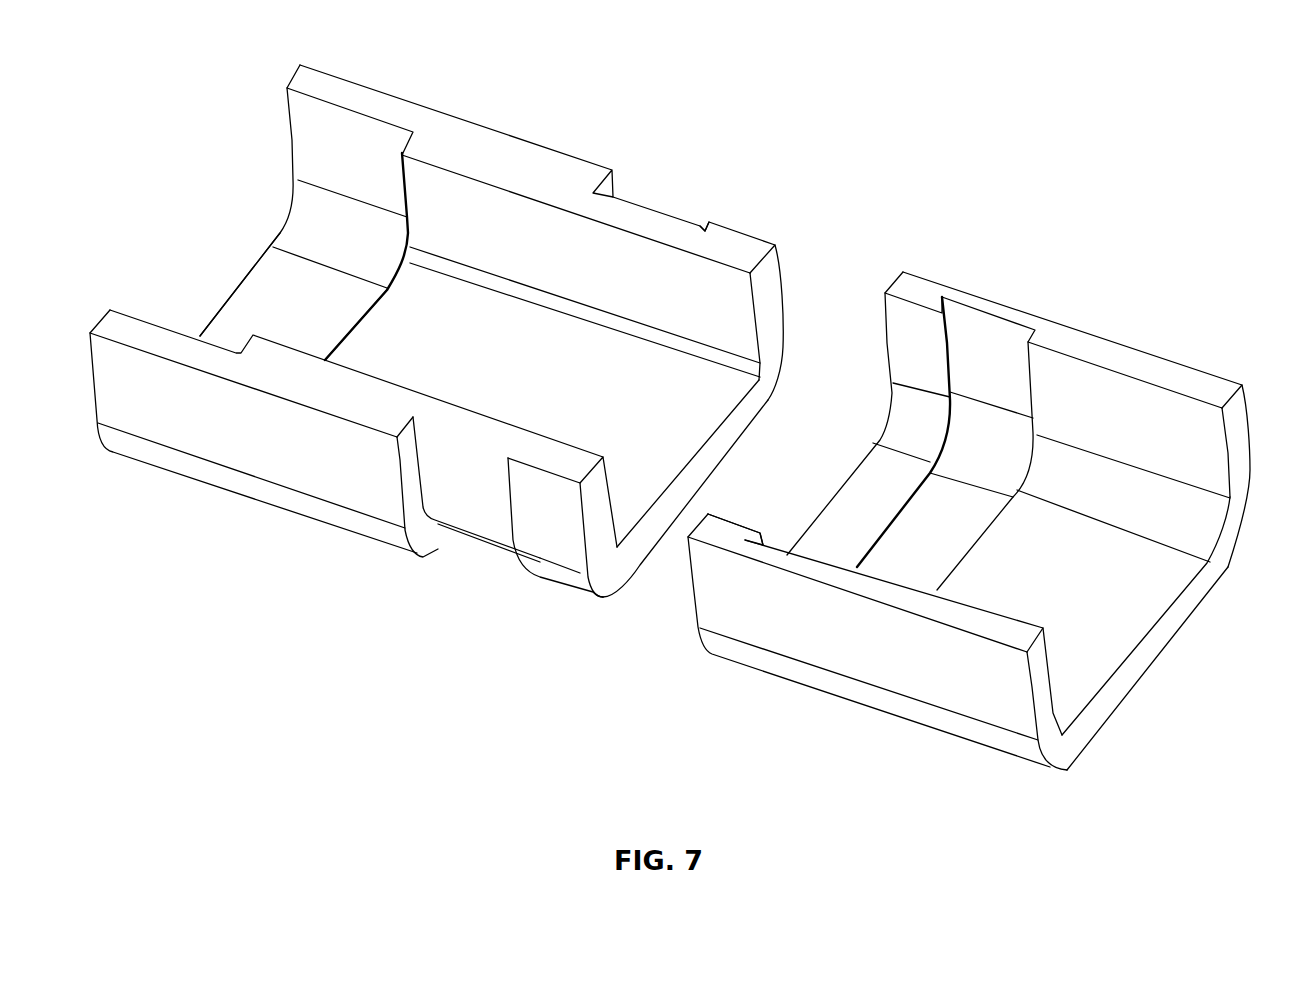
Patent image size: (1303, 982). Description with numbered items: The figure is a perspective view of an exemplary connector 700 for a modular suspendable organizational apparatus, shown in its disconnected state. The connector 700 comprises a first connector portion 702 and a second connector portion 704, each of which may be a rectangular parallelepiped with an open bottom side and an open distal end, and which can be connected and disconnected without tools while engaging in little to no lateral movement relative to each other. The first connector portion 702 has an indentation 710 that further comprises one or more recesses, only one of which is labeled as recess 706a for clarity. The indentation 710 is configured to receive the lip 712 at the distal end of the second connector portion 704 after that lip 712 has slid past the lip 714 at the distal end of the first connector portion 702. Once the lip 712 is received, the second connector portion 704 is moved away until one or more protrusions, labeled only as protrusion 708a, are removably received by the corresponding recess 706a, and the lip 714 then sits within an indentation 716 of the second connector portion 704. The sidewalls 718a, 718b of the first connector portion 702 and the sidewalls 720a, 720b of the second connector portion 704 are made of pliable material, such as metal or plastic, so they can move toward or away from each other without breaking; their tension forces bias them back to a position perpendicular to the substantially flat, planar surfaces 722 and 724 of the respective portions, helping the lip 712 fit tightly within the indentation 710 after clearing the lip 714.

The connector 700 is at (175, 718).
The first connector portion 702 is at (176, 140).
The second connector portion 704 is at (1133, 240).
The recess 706a is at (699, 223).
The protrusion 708a is at (942, 310).
The indentation 710 is at (470, 480).
The lip 712 is at (712, 528).
The lip 714 is at (561, 462).
The indentation 716 is at (950, 528).
The sidewall 718a is at (245, 447).
The sidewall 718b is at (518, 173).
The sidewall 720a is at (847, 652).
The sidewall 720b is at (1163, 373).
The planar surface 722 is at (453, 333).
The planar surface 724 is at (1133, 597).